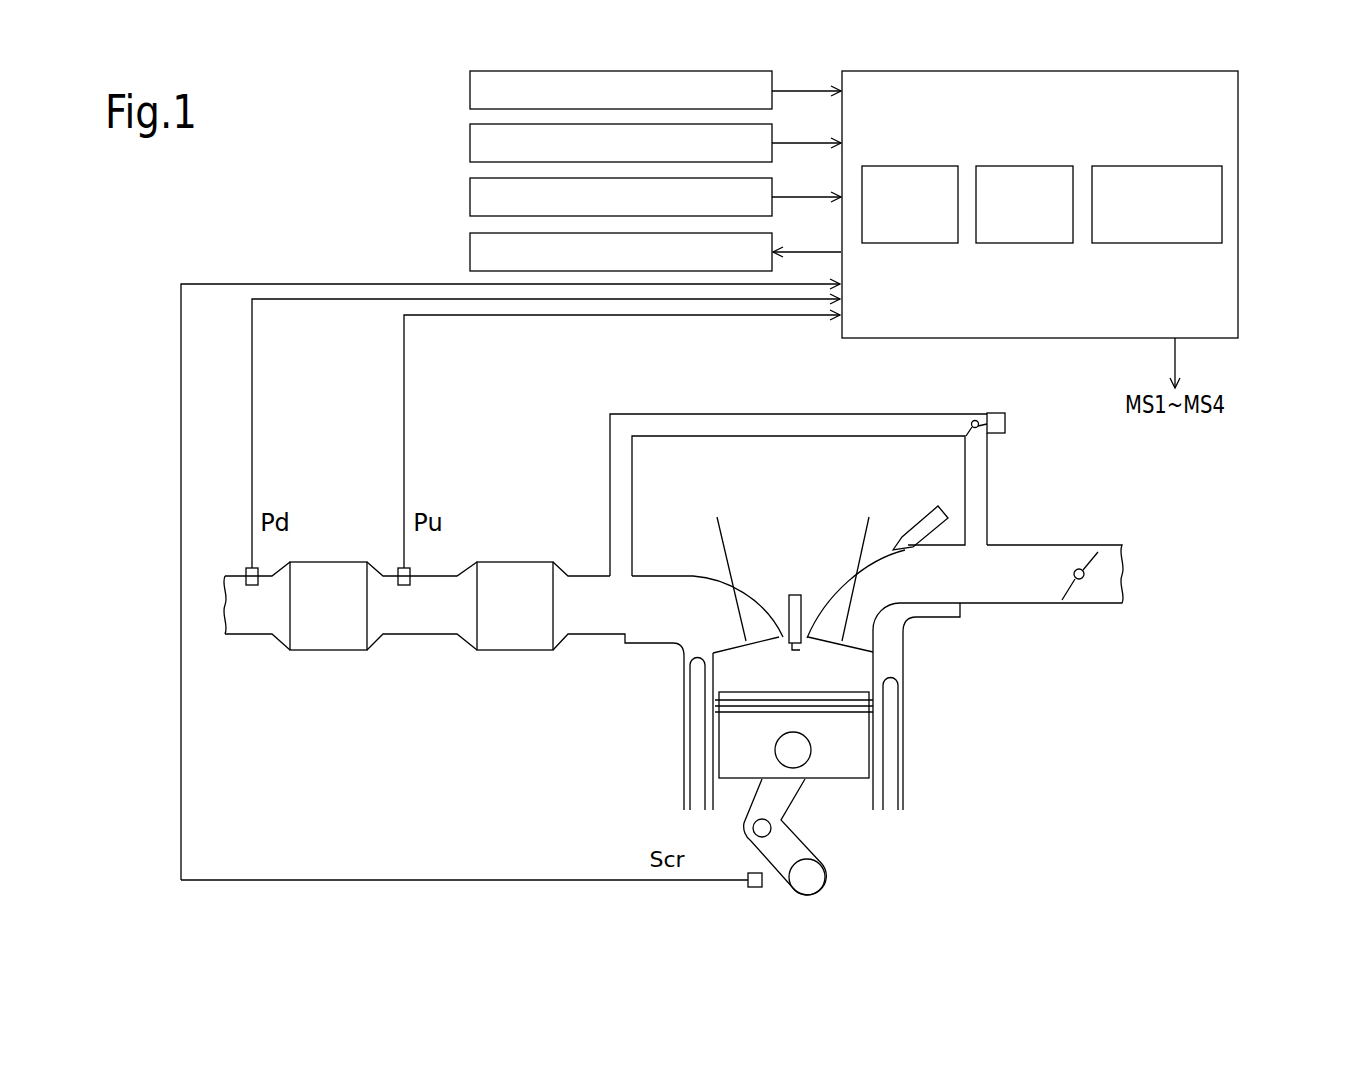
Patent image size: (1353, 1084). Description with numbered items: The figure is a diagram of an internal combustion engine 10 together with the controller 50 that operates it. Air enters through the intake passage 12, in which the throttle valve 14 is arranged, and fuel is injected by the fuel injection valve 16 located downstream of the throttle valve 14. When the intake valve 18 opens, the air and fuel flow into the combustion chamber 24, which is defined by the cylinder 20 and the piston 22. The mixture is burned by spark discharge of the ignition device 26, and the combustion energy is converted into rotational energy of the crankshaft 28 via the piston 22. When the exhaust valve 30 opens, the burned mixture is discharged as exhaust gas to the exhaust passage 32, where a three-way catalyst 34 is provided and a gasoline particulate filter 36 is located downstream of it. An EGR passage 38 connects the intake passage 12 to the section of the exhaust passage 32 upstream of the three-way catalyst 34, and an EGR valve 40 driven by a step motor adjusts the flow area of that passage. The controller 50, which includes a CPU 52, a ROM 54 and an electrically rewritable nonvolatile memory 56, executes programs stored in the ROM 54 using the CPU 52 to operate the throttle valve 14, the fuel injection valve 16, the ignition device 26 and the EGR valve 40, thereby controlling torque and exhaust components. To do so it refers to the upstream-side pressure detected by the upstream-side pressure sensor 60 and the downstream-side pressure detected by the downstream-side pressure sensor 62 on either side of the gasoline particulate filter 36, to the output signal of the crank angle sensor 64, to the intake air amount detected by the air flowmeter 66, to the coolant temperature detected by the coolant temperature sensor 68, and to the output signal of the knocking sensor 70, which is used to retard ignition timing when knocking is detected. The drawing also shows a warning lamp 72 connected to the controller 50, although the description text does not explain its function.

The internal combustion engine 10 is at (892, 399).
The intake passage 12 is at (1095, 604).
The throttle valve 14 is at (1075, 561).
The fuel injection valve 16 is at (934, 505).
The intake valve 18 is at (848, 641).
The cylinder 20 is at (905, 732).
The piston 22 is at (858, 763).
The combustion chamber 24 is at (853, 672).
The ignition device 26 is at (785, 591).
The crankshaft 28 is at (818, 876).
The exhaust valve 30 is at (740, 646).
The exhaust passage 32 is at (597, 634).
The three-way catalyst 34 is at (516, 568).
The gasoline particulate filter 36 is at (330, 568).
The EGR passage 38 is at (985, 486).
The EGR valve 40 is at (980, 432).
The controller 50 is at (1238, 95).
The CPU 52 is at (925, 166).
The ROM 54 is at (1041, 166).
The nonvolatile memory 56 is at (1172, 166).
The upstream-side pressure sensor 60 is at (400, 567).
The downstream-side pressure sensor 62 is at (247, 567).
The crank angle sensor 64 is at (757, 888).
The air flowmeter 66 is at (470, 90).
The coolant temperature sensor 68 is at (470, 144).
The knocking sensor 70 is at (470, 198).
The warning lamp 72 is at (470, 252).